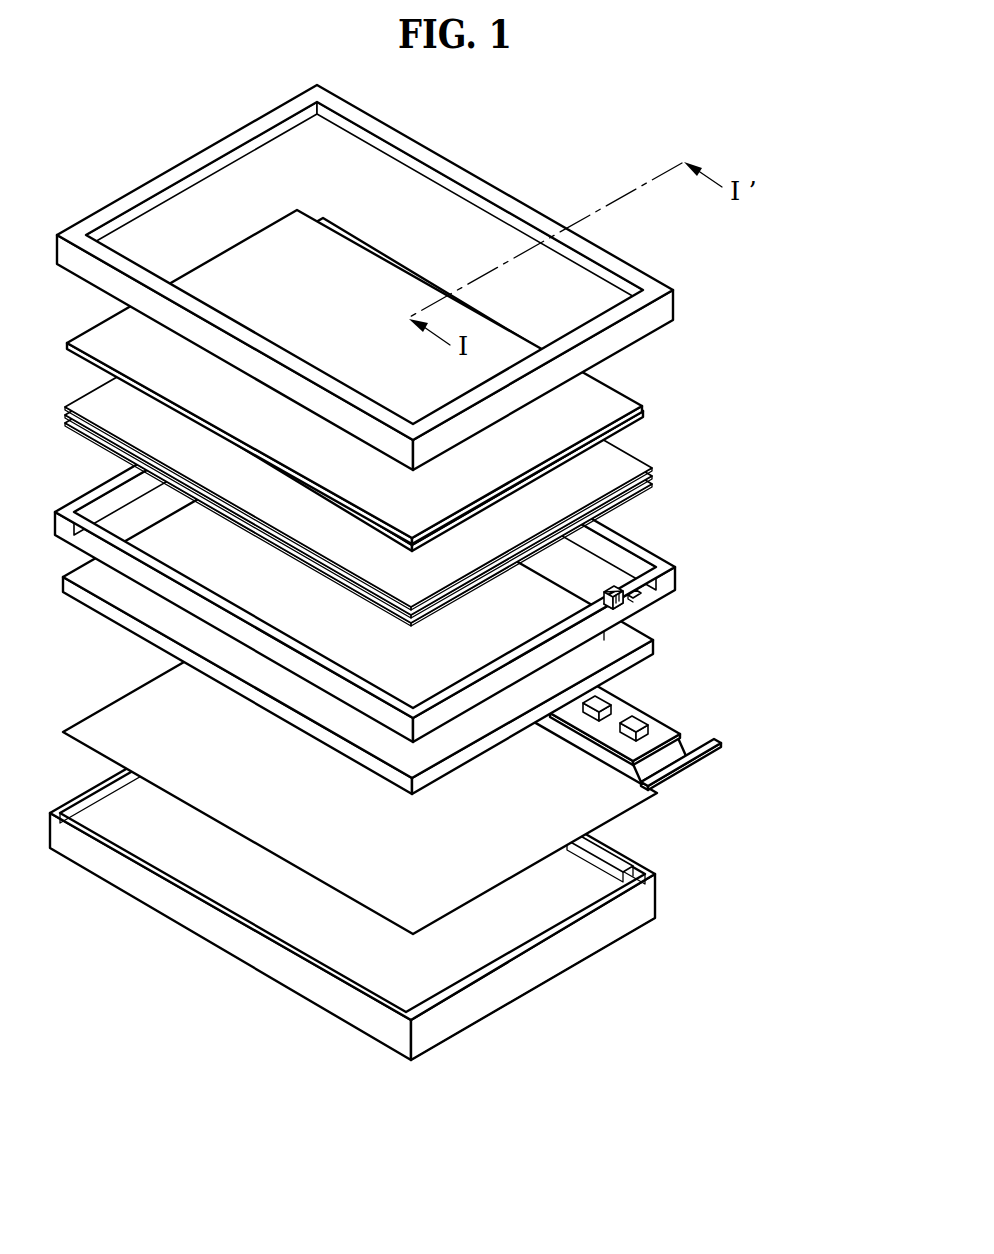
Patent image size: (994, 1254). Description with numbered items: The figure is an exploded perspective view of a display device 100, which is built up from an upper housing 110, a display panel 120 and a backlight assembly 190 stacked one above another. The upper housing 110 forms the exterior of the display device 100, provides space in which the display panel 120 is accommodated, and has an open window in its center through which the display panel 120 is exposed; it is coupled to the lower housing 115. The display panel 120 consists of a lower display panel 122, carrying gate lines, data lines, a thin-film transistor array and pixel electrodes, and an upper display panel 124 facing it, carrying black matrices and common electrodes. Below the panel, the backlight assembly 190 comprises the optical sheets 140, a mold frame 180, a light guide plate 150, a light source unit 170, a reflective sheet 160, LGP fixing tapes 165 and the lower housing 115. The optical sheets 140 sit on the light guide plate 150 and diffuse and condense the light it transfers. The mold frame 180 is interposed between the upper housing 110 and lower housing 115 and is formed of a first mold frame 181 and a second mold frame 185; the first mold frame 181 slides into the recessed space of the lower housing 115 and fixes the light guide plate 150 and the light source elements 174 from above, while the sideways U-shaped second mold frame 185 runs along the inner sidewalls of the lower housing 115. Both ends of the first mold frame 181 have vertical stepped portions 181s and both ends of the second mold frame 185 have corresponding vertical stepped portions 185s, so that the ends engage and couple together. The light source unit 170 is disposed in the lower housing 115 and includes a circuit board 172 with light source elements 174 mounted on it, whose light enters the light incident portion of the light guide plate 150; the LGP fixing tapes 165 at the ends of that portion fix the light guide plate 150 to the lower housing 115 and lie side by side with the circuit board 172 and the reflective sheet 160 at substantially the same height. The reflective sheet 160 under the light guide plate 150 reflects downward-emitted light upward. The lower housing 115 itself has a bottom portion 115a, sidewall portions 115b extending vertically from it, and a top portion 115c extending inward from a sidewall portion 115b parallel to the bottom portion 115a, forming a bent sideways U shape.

The display device 100 is at (540, 168).
The upper housing 110 is at (663, 308).
The display panel 120 is at (428, 380).
The lower display panel 122 is at (634, 416).
The upper display panel 124 is at (624, 399).
The optical sheets 140 is at (660, 463).
The light guide plate 150 is at (643, 652).
The reflective sheet 160 is at (612, 806).
The LGP fixing tapes 165 is at (677, 768).
The light source unit 170 is at (673, 736).
The circuit board 172 is at (665, 736).
The light source elements 174 is at (640, 702).
The mold frame 180 is at (431, 551).
The first mold frame 181 is at (640, 538).
The vertical stepped portions 181s is at (640, 607).
The second mold frame 185 is at (623, 592).
The vertical stepped portions 185s is at (600, 630).
The backlight assembly 190 is at (460, 710).
The lower housing 115 is at (395, 864).
The bottom portion 115a is at (600, 890).
The sidewall portions 115b is at (638, 876).
The top portion 115c is at (617, 853).